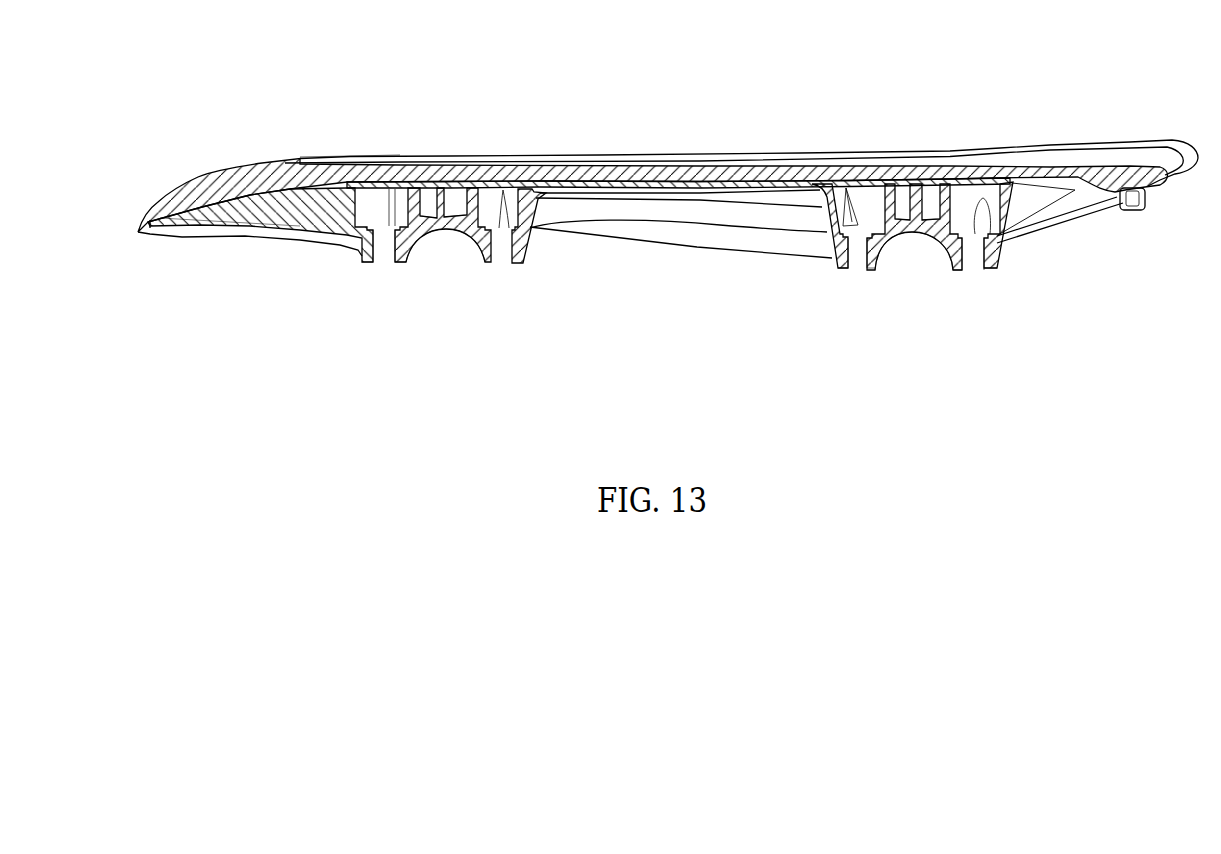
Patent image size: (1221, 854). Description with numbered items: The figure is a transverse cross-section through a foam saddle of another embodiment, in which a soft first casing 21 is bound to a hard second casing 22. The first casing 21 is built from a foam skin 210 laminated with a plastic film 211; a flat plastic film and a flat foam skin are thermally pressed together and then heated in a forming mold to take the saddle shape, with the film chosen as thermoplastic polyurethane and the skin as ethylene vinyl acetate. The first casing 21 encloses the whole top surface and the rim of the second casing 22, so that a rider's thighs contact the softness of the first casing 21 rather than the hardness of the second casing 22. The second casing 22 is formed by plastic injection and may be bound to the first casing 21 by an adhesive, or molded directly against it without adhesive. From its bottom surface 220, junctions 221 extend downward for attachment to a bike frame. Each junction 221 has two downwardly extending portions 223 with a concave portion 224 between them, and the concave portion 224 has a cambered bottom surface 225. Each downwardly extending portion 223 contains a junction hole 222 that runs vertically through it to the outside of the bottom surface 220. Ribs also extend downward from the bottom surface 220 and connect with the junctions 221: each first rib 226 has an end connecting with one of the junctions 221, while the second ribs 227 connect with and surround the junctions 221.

The first casing 21 is at (668, 147).
The second casing 22 is at (641, 216).
The foam skin 210 is at (247, 180).
The plastic film 211 is at (307, 157).
The bottom surface 220 is at (735, 188).
The junction 221 is at (440, 279).
The junction hole 222 is at (384, 262).
The downwardly extending portion 223 is at (403, 258).
The concave portion 224 is at (453, 264).
The cambered bottom surface 225 is at (411, 255).
The first rib 226 is at (273, 207).
The second rib 227 is at (578, 207).